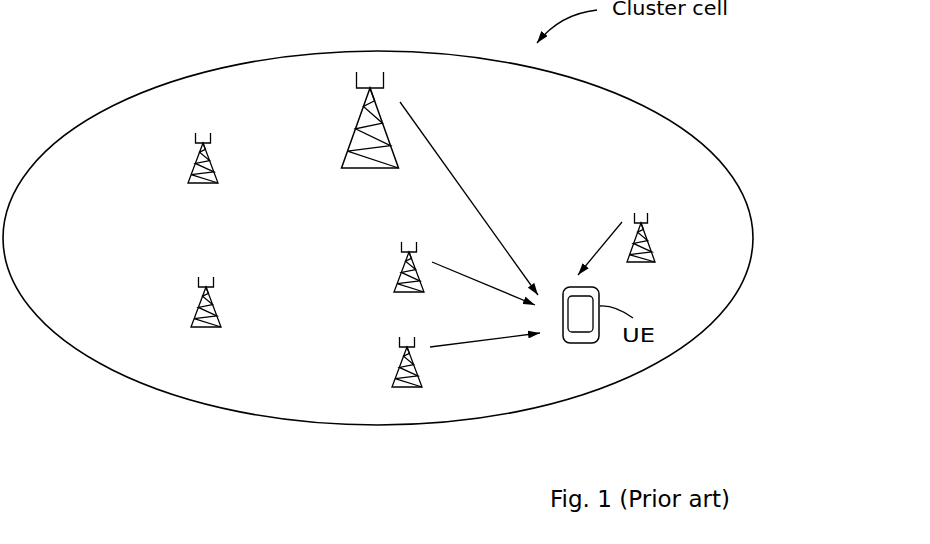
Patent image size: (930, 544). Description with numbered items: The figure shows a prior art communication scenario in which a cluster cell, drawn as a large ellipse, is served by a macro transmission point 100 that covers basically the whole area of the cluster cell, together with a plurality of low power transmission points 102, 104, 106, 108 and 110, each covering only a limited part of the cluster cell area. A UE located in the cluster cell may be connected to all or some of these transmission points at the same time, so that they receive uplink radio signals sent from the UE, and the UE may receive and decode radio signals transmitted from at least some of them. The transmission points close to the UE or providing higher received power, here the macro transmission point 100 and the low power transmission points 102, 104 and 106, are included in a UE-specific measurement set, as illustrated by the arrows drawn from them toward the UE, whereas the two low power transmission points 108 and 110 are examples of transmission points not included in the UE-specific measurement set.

The macro transmission point 100 is at (345, 150).
The low power transmission point 102 is at (392, 367).
The low power transmission point 104 is at (394, 270).
The low power transmission point 106 is at (658, 245).
The low power transmission point 108 is at (192, 310).
The low power transmission point 110 is at (190, 170).